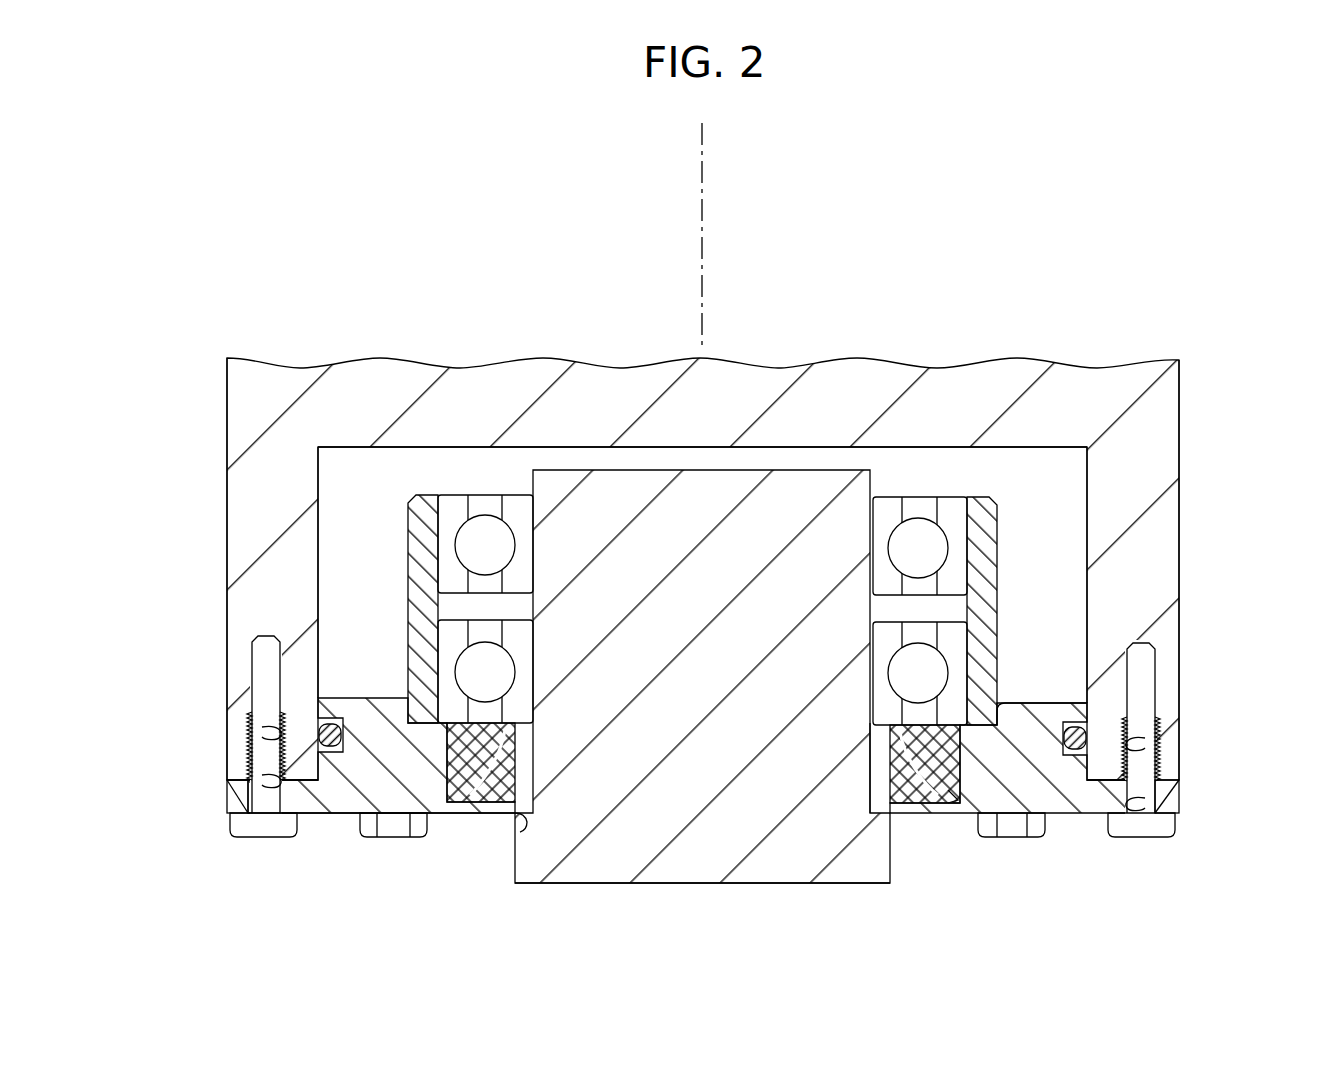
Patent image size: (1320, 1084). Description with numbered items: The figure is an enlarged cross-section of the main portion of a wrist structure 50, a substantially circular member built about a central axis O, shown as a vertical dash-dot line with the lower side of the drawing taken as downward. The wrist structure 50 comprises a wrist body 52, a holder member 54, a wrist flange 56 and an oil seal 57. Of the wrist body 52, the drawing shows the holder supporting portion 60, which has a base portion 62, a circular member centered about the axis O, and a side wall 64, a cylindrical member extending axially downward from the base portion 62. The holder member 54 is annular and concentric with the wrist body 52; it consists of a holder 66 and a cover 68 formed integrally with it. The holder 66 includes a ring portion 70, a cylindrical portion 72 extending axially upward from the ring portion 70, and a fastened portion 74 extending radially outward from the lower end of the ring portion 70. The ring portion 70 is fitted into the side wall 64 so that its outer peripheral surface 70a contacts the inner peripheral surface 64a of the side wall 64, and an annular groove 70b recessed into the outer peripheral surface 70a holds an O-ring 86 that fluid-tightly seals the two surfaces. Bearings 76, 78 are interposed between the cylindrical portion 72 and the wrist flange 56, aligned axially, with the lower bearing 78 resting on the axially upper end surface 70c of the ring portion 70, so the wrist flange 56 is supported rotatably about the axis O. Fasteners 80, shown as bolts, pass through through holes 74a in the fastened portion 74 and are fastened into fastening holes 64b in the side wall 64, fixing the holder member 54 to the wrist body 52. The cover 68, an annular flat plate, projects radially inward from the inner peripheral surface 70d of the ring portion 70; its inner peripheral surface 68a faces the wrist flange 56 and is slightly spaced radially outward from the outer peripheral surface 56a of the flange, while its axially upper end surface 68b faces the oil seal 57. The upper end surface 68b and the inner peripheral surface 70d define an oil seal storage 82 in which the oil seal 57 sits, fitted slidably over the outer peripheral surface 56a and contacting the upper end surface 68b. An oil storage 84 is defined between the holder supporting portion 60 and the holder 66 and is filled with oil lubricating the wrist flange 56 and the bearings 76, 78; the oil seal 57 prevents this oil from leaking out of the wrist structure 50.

The axis O is at (702, 178).
The wrist structure 50 is at (1037, 208).
The wrist body 52 is at (344, 311).
The holder member 54 is at (347, 824).
The wrist flange 56 is at (722, 682).
The outer peripheral surface of the wrist flange 56a is at (890, 865).
The oil seal 57 is at (481, 758).
The holder supporting portion 60 is at (1192, 458).
The base portion 62 is at (720, 421).
The side wall 64 is at (1152, 585).
The inner peripheral surface of the side wall 64a is at (1087, 493).
The fastening holes 64b is at (252, 722).
The holder 66 is at (1040, 698).
The cover 68 is at (903, 813).
The inner peripheral surface of the cover 68a is at (513, 815).
The axially upper end surface of the cover 68b is at (950, 806).
The ring portion 70 is at (407, 769).
The outer peripheral surface of the ring portion 70a is at (1090, 790).
The annular groove 70b is at (336, 742).
The axially upper end surface of the ring portion 70c is at (959, 722).
The inner peripheral surface of the ring portion 70d is at (1021, 838).
The cylindrical portion 72 is at (420, 557).
The fastened portion 74 is at (226, 806).
The through holes 74a is at (256, 776).
The bearing 76 is at (538, 552).
The bearing 78 is at (538, 652).
The fasteners 80 is at (268, 832).
The oil seal storage 82 is at (888, 775).
The oil storage 84 is at (379, 517).
The O-ring 86 is at (343, 814).